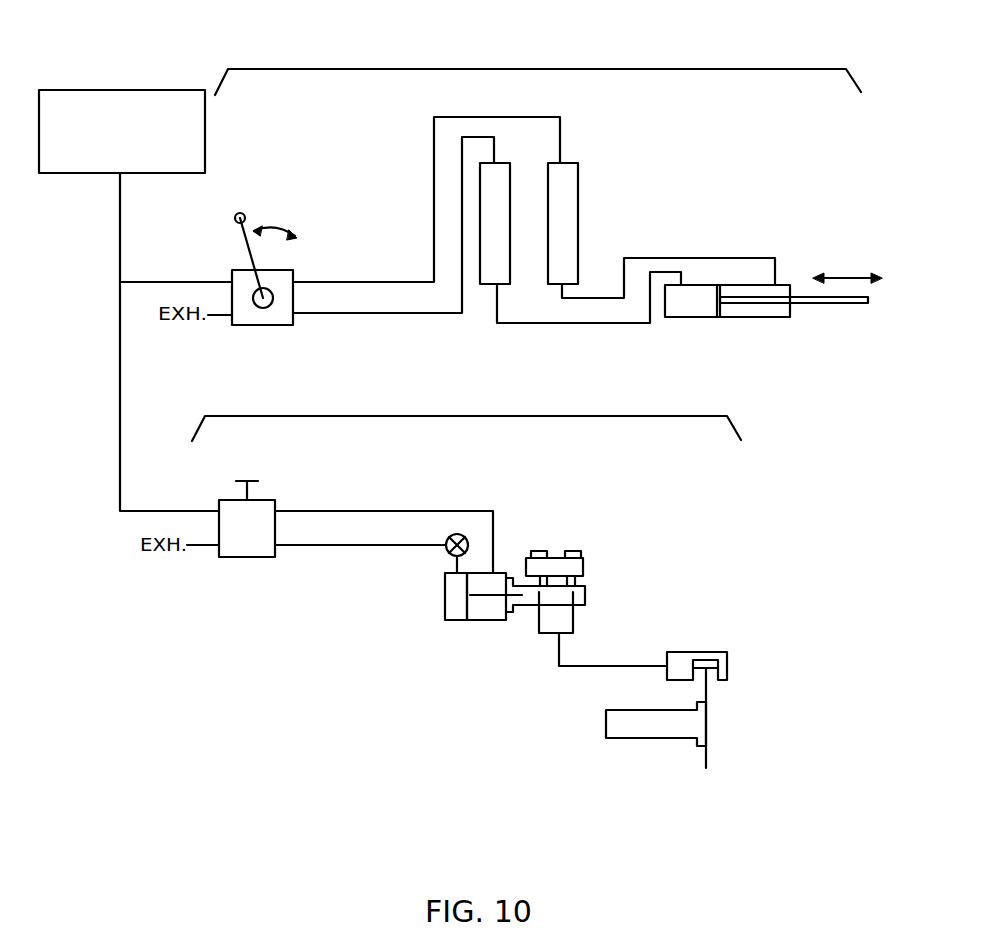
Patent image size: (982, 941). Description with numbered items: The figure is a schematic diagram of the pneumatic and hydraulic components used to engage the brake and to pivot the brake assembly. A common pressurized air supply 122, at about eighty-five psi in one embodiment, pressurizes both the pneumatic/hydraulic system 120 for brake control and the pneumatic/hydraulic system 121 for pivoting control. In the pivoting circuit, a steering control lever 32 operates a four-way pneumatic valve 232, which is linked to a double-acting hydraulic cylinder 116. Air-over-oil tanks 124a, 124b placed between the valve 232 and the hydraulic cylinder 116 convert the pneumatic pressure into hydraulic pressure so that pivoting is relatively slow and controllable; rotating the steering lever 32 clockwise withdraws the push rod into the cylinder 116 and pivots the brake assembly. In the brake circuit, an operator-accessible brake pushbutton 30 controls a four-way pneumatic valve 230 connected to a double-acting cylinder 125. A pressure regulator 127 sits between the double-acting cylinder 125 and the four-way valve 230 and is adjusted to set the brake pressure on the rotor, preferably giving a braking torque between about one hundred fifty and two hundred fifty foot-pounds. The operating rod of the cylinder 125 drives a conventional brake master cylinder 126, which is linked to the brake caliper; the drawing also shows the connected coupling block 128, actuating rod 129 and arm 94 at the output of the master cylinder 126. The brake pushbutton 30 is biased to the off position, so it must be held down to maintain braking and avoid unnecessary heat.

The pressurized air supply 122 is at (100, 90).
The pneumatic/hydraulic system for brake control 120 is at (503, 69).
The pneumatic/hydraulic system for pivoting control 121 is at (418, 416).
The steering control lever 32 is at (245, 243).
The four-way pneumatic valve 232 is at (266, 324).
The air-over-oil tank 124a is at (503, 192).
The air-over-oil tank 124b is at (570, 220).
The double-acting hydraulic cylinder 116 is at (695, 308).
The brake pushbutton 30 is at (248, 471).
The four-way pneumatic valve 230 is at (258, 558).
The pressure regulator 127 is at (447, 540).
The double-acting cylinder 125 is at (460, 620).
The brake master cylinder 126 is at (585, 567).
The coupling block 128 is at (688, 652).
The actuating rod 129 is at (707, 748).
The clamp arm 94 is at (660, 738).